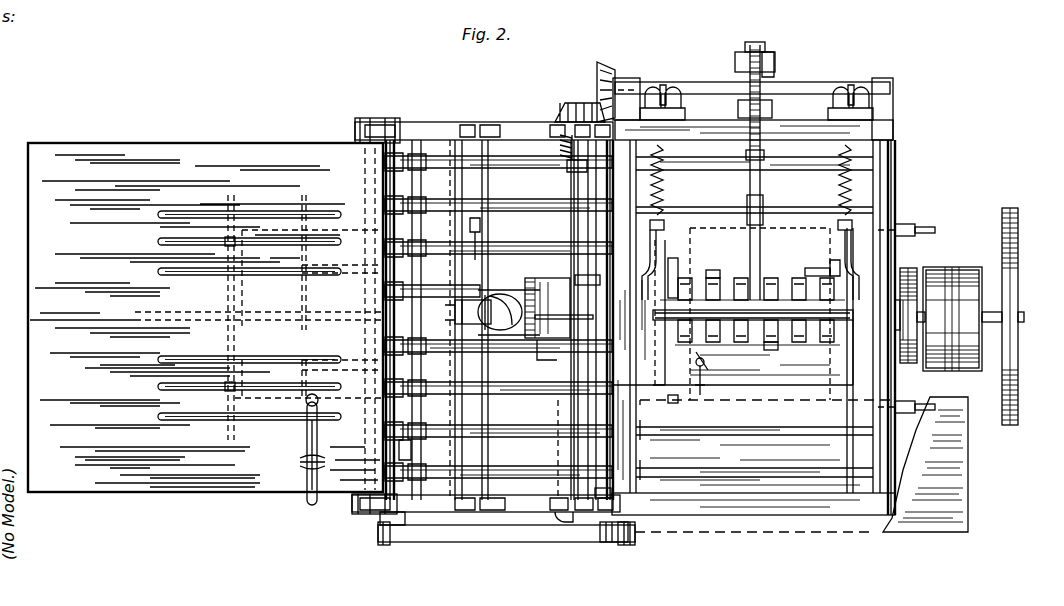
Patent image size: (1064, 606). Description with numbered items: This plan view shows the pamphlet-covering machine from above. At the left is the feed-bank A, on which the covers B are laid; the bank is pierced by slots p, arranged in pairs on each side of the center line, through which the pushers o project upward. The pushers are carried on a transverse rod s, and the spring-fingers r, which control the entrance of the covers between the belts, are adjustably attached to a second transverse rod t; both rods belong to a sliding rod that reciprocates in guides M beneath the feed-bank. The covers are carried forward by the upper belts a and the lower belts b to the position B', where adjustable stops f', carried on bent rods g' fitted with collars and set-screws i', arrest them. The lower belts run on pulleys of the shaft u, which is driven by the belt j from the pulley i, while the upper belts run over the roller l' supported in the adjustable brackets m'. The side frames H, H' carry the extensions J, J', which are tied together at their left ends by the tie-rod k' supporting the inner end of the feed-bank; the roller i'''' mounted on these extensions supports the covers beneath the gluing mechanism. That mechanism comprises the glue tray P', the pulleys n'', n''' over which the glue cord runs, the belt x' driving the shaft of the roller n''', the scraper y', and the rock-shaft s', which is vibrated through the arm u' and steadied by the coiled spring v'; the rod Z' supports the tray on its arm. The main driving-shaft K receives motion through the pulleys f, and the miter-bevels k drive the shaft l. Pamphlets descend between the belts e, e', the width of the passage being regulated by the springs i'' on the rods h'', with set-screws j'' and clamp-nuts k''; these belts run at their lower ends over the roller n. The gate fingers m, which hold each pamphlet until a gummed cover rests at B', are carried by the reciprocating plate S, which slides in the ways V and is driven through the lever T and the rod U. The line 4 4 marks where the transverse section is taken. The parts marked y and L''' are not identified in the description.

The feed-bank A is at (205, 317).
The slots p is at (186, 211).
The pushers o is at (225, 242).
The covers B is at (312, 315).
The transverse rod t is at (274, 317).
The spring-fingers r is at (342, 305).
The transverse rod s is at (259, 355).
The transverse tie-rod k' is at (358, 319).
The extension or bracket J' is at (484, 118).
The extension or bracket J is at (486, 513).
The belt j is at (506, 544).
The arm u' is at (564, 539).
The pulley i is at (614, 544).
The brackets m' is at (616, 499).
The upper belts a is at (498, 317).
The posts y is at (485, 320).
The shaft u is at (405, 450).
The shaft l is at (584, 320).
The rock-shaft s' is at (569, 174).
The coiled spring v' is at (554, 124).
The roller i'''' is at (491, 237).
The tray or trough P' is at (547, 299).
The roller n is at (509, 312).
The pulley n'' is at (459, 312).
The pulley n''' is at (570, 314).
The belt x' is at (590, 271).
The scraper y' is at (544, 355).
The side frame H' is at (754, 117).
The roller l' is at (753, 97).
The miter-bevels k is at (585, 92).
The clamp-nuts k'' is at (781, 83).
The lever T is at (750, 163).
The rod Z' is at (776, 58).
The rod U is at (757, 184).
The springs i'' is at (751, 180).
The set-screws j'' is at (751, 202).
The rods h'' is at (783, 237).
The cover position B' is at (760, 305).
The guides or ways V is at (638, 360).
The reciprocating plate S is at (753, 331).
The belt e' is at (712, 262).
The belt e is at (768, 353).
The lower belts b is at (669, 337).
The section line 4 is at (767, 314).
The adjustable stops f' is at (818, 261).
The sliding fingers m is at (713, 372).
The side frame H is at (755, 531).
The guides or supports M is at (910, 303).
The pulleys f is at (962, 304).
The main driving-shaft K is at (1024, 318).
The bent arms g' is at (922, 318).
The collars and set-screws i' is at (901, 301).
The bracket L''' is at (941, 464).